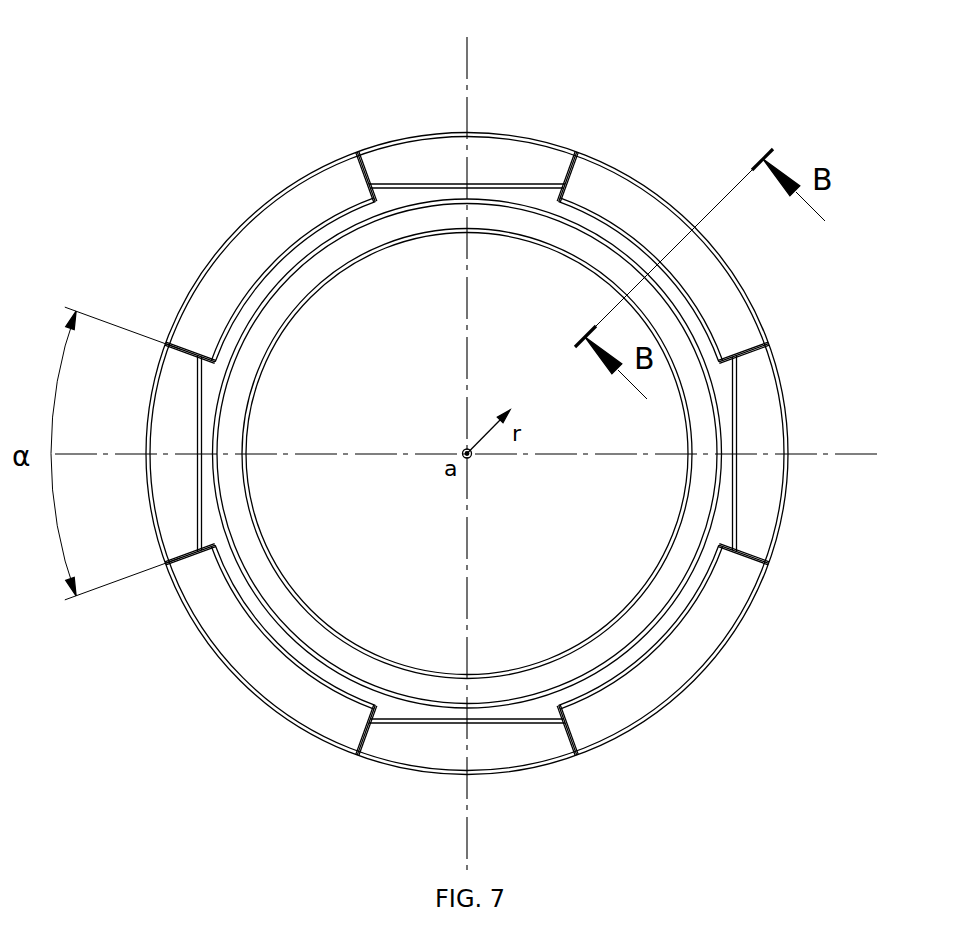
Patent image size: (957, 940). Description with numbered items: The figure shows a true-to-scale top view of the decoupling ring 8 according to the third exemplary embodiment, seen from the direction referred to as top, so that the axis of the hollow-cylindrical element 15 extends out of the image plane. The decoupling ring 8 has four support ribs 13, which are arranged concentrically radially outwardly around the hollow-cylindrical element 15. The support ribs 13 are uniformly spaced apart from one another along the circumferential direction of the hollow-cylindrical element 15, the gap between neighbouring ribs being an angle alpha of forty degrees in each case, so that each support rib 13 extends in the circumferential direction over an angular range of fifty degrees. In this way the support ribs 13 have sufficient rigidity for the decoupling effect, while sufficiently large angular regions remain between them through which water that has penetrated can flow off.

The decoupling ring 8 is at (82, 62).
The support rib 13 is at (235, 291).
The hollow-cylindrical element 15 is at (319, 267).